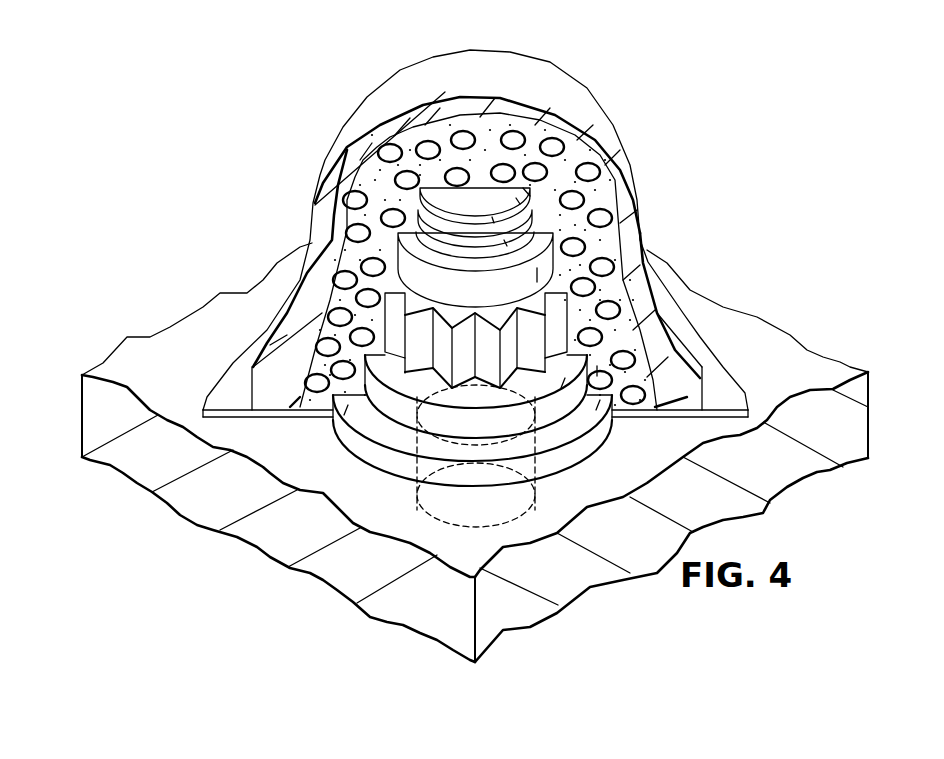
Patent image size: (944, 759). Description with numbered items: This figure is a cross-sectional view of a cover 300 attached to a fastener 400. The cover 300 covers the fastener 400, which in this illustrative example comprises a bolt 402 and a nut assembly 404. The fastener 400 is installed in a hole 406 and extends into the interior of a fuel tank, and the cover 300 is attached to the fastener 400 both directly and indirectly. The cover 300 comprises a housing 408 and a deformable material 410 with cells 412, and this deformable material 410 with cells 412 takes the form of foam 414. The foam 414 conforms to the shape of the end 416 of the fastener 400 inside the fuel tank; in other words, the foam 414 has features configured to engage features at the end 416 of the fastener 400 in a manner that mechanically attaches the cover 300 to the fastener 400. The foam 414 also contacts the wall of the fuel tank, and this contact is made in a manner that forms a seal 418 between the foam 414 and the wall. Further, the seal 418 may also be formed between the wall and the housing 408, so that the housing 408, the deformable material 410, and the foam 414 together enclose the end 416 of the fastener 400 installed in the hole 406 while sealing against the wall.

The cover 300 is at (339, 94).
The fastener 400 is at (543, 208).
The bolt 402 is at (337, 143).
The nut assembly 404 is at (396, 253).
The hole 406 is at (556, 462).
The housing 408 is at (313, 193).
The deformable material 410 is at (610, 235).
The cells 412 is at (583, 203).
The foam 414 is at (450, 130).
The end 416 is at (480, 186).
The seal 418 is at (270, 418).